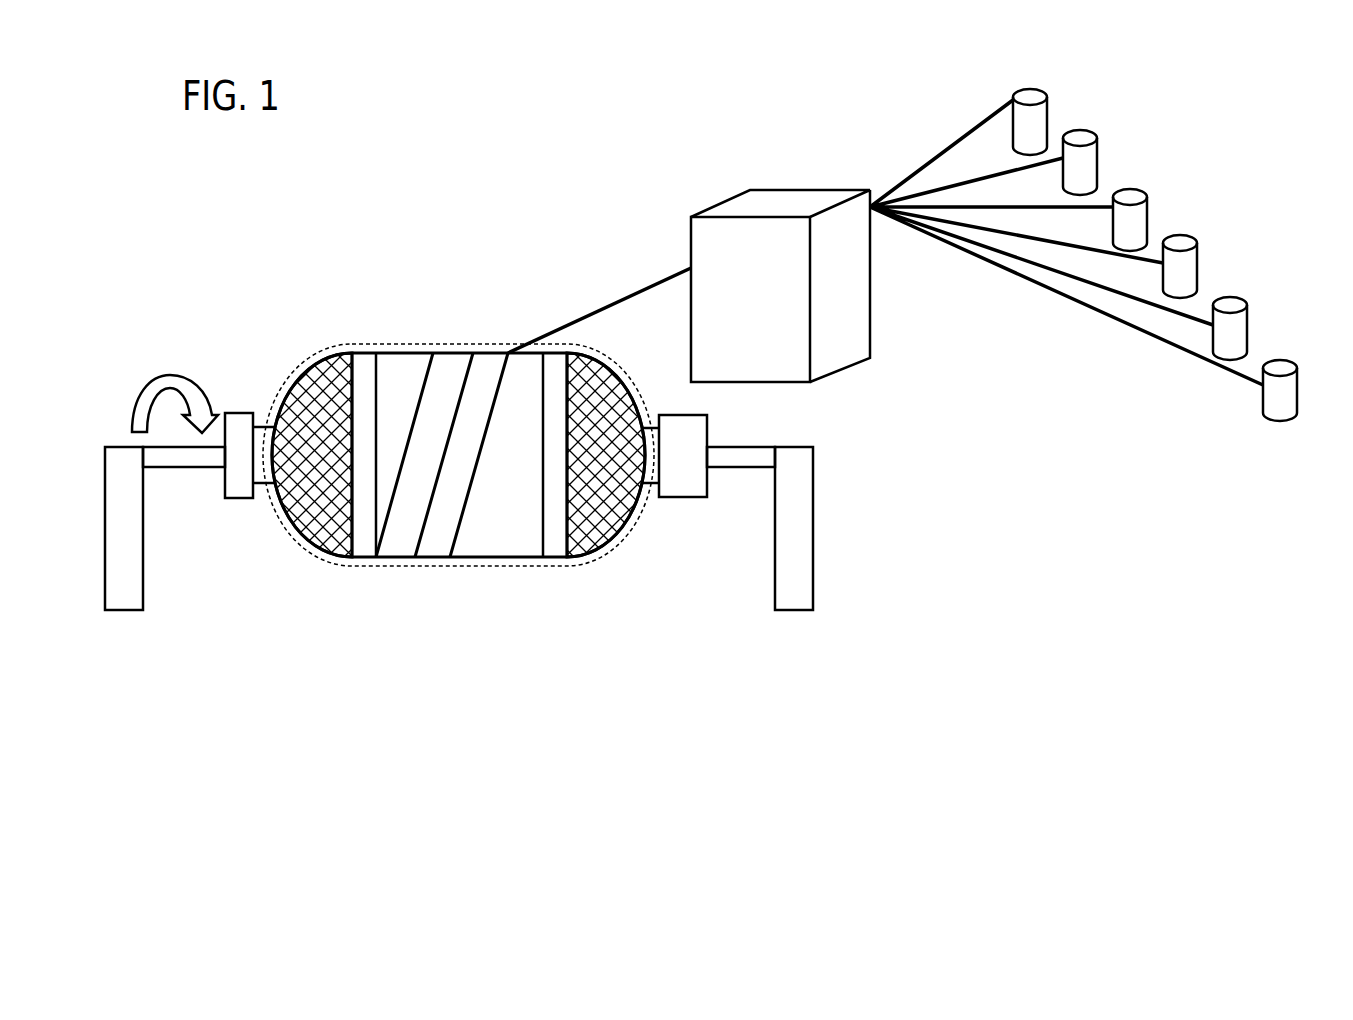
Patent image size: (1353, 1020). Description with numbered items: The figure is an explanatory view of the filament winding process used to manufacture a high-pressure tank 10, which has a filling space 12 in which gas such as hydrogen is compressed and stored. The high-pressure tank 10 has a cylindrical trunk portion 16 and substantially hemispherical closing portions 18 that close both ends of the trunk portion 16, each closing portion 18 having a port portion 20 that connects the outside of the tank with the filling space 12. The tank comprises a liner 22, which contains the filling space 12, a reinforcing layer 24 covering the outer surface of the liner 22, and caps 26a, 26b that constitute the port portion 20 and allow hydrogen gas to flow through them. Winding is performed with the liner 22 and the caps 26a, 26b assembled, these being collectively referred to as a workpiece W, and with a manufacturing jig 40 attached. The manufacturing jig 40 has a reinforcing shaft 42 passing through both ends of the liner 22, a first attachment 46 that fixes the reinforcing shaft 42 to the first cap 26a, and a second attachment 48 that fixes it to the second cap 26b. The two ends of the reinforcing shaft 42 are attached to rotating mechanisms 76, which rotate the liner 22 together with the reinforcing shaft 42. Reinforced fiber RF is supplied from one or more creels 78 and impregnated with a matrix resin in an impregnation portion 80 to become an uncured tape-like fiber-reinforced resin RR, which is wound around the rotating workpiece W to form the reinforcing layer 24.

The high-pressure tank 10 is at (358, 329).
The filling space 12 is at (322, 360).
The trunk portion 16 is at (403, 352).
The closing portion 18 is at (320, 542).
The port portion 20 is at (456, 494).
The first cap 26a is at (263, 472).
The second cap 26b is at (658, 477).
The liner 22 is at (449, 342).
The reinforcing layer 24 is at (485, 350).
The manufacturing jig 40 is at (242, 398).
The reinforcing shaft 42 is at (742, 457).
The first attachment 46 is at (209, 493).
The second attachment 48 is at (723, 420).
The rotating mechanism 76 is at (127, 600).
The creel 78 is at (1180, 243).
The impregnation portion 80 is at (735, 205).
The workpiece W is at (403, 560).
The fiber-reinforced resin RR is at (608, 303).
The reinforced fiber RF is at (965, 180).